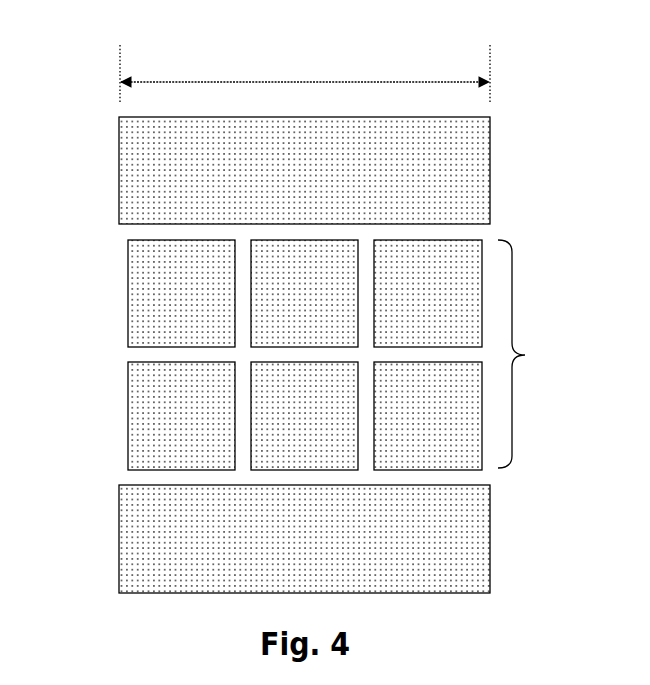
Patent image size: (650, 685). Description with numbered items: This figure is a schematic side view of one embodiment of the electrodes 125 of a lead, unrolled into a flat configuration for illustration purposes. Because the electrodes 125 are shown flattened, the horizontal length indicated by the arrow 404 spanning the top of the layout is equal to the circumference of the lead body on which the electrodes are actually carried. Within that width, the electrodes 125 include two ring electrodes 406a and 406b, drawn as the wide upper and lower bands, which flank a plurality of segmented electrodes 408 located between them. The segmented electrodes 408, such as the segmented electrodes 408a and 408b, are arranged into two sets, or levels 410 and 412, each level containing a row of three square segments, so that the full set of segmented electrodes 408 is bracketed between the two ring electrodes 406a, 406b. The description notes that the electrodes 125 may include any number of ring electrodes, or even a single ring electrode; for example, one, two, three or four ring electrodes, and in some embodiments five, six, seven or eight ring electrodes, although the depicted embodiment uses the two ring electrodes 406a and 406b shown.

The electrodes 125 is at (565, 176).
The arrow 404 is at (362, 80).
The ring electrode 406a is at (119, 539).
The ring electrode 406b is at (119, 172).
The segmented electrodes 408 is at (532, 354).
The segmented electrode 408a is at (128, 414).
The segmented electrode 408b is at (128, 297).
The level 410 is at (531, 413).
The level 412 is at (531, 292).